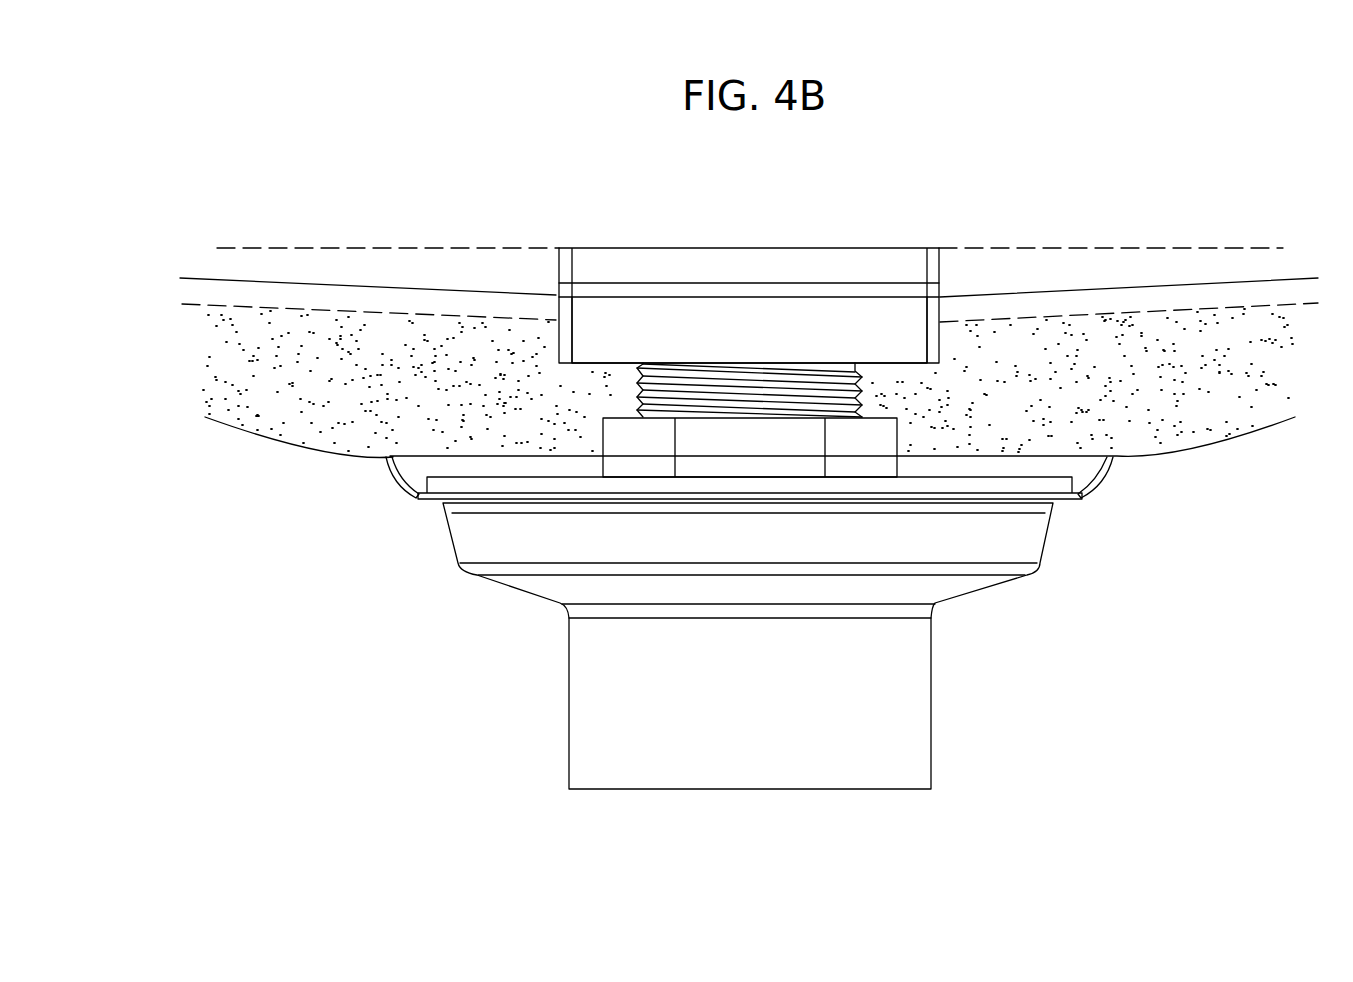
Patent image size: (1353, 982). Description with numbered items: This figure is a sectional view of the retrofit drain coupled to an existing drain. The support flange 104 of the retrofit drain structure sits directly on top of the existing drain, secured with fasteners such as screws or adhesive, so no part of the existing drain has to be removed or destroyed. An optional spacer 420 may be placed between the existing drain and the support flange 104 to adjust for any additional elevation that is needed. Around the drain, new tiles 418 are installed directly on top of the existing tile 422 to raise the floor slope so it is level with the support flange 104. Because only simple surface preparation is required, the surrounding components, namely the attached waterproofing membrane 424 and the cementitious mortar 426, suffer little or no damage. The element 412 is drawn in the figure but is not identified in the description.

The support flange 104 is at (940, 265).
The drain riser 412 is at (908, 340).
The tiles 418 is at (431, 248).
The spacer 420 is at (940, 288).
The existing tile 422 is at (180, 278).
The water proofing membrane 424 is at (205, 417).
The cementitious mortar 426 is at (260, 365).